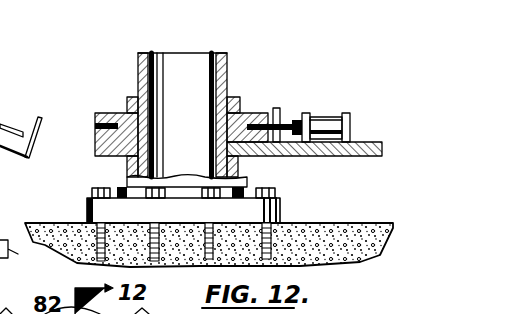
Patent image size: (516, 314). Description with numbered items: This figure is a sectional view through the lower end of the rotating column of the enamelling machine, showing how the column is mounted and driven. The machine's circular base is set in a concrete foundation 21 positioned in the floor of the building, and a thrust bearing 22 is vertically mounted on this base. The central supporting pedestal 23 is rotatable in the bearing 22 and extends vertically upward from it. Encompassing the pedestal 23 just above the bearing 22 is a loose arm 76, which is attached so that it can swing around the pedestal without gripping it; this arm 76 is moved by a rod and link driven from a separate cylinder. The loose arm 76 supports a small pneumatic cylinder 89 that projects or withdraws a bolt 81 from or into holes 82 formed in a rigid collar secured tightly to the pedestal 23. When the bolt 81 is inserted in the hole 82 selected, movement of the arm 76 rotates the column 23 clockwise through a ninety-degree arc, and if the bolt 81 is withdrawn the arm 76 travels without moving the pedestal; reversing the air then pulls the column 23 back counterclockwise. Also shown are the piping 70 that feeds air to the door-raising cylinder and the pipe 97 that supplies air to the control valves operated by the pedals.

The concrete foundation 21 is at (382, 250).
The thrust bearing 22 is at (127, 166).
The central supporting pedestal 23 is at (228, 85).
The piping 70 is at (25, 255).
The arm 76 is at (383, 147).
The bolt 81 is at (283, 113).
The holes 82 is at (95, 134).
The small pneumatic cylinder 89 is at (330, 118).
The pipe 97 is at (40, 133).